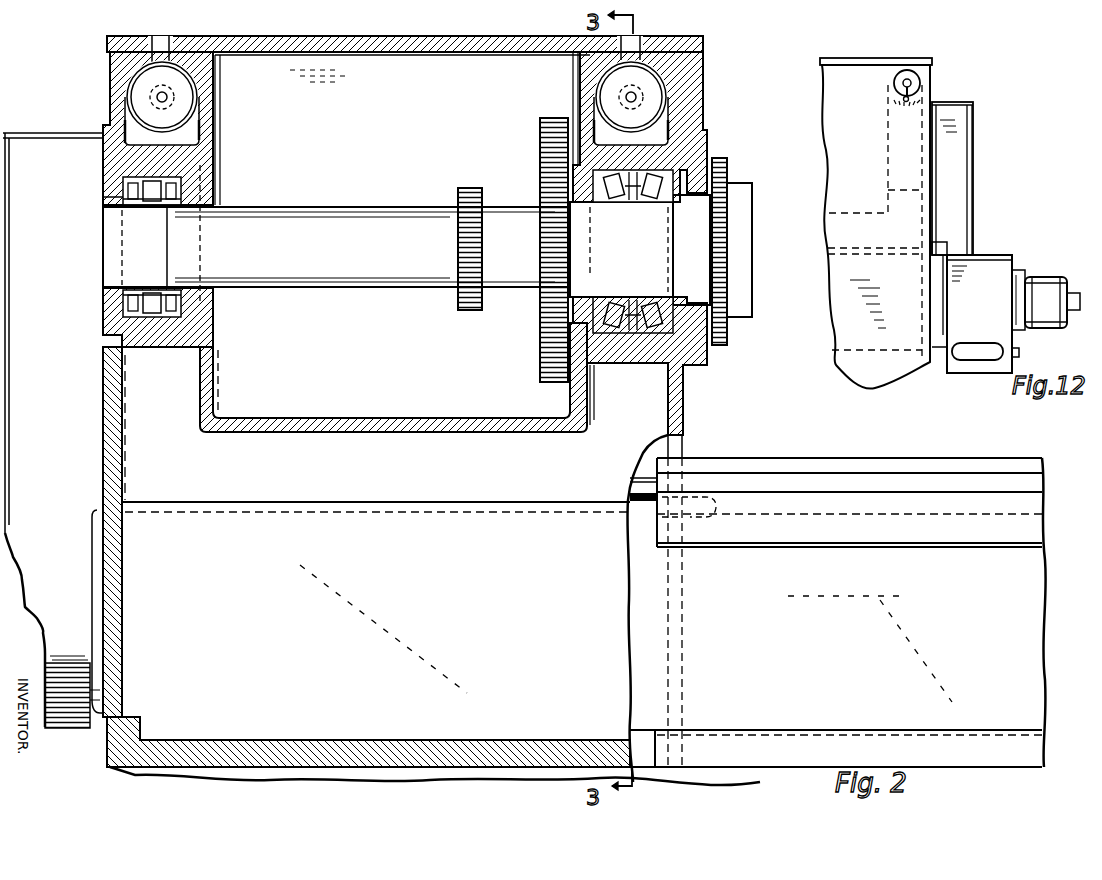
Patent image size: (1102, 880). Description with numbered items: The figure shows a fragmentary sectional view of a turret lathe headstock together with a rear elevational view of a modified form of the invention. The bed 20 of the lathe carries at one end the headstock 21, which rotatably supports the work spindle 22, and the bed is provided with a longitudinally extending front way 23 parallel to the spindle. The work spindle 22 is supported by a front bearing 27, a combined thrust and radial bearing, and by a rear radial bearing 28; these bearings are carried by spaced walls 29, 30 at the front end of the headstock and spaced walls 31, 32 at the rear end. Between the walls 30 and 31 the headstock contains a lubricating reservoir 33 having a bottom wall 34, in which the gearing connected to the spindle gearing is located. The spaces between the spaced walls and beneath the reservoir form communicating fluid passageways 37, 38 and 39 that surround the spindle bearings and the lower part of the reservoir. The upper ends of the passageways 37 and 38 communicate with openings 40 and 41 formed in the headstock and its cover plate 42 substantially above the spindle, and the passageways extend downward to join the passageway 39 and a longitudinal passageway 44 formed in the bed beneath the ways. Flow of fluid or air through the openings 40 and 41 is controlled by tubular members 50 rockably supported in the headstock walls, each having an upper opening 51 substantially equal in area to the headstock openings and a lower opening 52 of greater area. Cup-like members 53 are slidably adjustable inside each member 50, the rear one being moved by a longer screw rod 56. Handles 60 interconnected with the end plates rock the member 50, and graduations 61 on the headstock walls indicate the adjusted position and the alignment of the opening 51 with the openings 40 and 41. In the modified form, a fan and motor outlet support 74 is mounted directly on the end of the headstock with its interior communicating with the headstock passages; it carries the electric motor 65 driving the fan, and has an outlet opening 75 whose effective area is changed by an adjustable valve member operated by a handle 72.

In FIG. 2, the bed 20 is at (982, 757).
In FIG. 2, the headstock 21 is at (420, 75).
In FIG. 12, the headstock 21 is at (830, 135).
In FIG. 2, the work spindle 22 is at (375, 207).
In FIG. 2, the front way 23 is at (880, 460).
In FIG. 2, the front bearing 27 is at (690, 175).
In FIG. 2, the rear radial bearing 28 is at (180, 195).
In FIG. 2, the wall 29 is at (683, 415).
In FIG. 2, the wall 30 is at (553, 386).
In FIG. 2, the wall 31 is at (210, 378).
In FIG. 2, the wall 32 is at (103, 410).
In FIG. 2, the lubricating reservoir 33 is at (396, 195).
In FIG. 2, the bottom wall 34 is at (365, 418).
In FIG. 2, the passageway 37 is at (614, 395).
In FIG. 2, the passageway 38 is at (147, 427).
In FIG. 2, the passageway 39 is at (376, 480).
In FIG. 2, the opening 40 is at (640, 46).
In FIG. 2, the opening 41 is at (165, 46).
In FIG. 2, the cover plate 42 is at (480, 46).
In FIG. 12, the cover plate 42 is at (860, 60).
In FIG. 2, the passageway 44 is at (1010, 733).
In FIG. 2, the tubular member 50 is at (200, 118).
In FIG. 12, the tubular member 50 is at (918, 80).
In FIG. 2, the upper opening 51 is at (133, 66).
In FIG. 2, the lower opening 52 is at (135, 128).
In FIG. 2, the cup-like member 53 is at (178, 86).
In FIG. 2, the screw rod 56 is at (152, 93).
In FIG. 12, the handle 60 is at (912, 86).
In FIG. 12, the graduations 61 is at (897, 103).
In FIG. 12, the electric motor 65 is at (1045, 278).
In FIG. 12, the handle 72 is at (1021, 352).
In FIG. 12, the fan and motor outlet support 74 is at (970, 263).
In FIG. 12, the outlet opening 75 is at (980, 360).